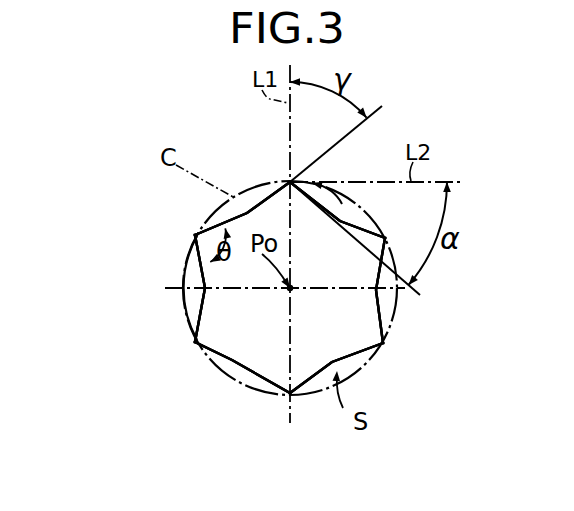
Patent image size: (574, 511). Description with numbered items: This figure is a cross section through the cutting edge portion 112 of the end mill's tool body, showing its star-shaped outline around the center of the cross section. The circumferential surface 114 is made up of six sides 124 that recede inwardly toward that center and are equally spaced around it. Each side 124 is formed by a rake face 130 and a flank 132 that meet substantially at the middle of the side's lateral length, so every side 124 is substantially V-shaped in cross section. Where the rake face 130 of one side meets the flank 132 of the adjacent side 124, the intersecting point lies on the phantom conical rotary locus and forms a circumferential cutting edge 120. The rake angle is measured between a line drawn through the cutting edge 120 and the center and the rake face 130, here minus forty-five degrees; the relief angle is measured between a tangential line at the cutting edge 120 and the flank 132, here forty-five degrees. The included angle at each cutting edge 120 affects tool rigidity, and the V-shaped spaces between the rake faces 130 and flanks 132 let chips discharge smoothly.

The cutting edge portion 112 is at (226, 328).
The circumferential surface 114 is at (178, 242).
The circumferential cutting edge 120 is at (290, 182).
The side 124 is at (333, 207).
The rake face 130 is at (200, 268).
The flank 132 is at (200, 315).